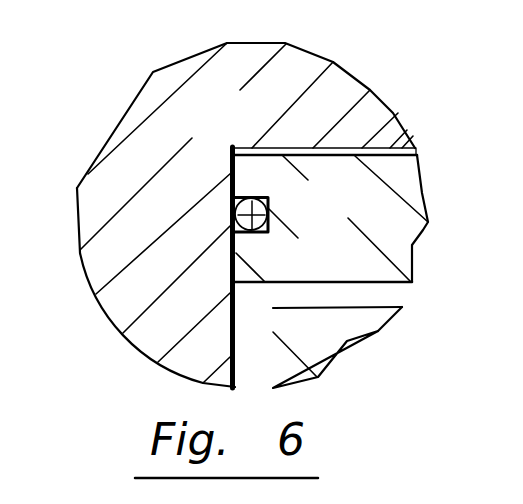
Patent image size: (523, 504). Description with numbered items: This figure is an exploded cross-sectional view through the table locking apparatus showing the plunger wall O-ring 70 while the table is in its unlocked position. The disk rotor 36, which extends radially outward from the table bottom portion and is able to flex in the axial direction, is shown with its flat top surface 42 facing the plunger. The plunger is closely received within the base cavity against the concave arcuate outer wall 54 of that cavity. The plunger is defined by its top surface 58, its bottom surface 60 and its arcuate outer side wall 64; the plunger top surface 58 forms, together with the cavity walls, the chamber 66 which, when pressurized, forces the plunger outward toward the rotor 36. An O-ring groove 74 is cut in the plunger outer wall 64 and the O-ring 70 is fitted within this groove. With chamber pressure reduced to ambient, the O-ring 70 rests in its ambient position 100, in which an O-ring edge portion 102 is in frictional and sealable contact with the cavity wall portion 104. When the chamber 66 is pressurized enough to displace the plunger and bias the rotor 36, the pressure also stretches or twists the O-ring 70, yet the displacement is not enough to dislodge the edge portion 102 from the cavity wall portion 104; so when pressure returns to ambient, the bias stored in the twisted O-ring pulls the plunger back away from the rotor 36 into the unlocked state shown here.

The ambient position 100 is at (208, 235).
The O-ring edge portion 102 is at (233, 203).
The cavity wall portion 104 is at (232, 212).
The outer wall 54 is at (239, 172).
The top surface 58 is at (332, 147).
The chamber 66 is at (395, 148).
The O-ring 70 is at (270, 208).
The O-ring groove 74 is at (258, 232).
The outer side wall 64 is at (233, 262).
The bottom surface 60 is at (380, 283).
The top surface 42 is at (403, 307).
The disk rotor 36 is at (315, 348).